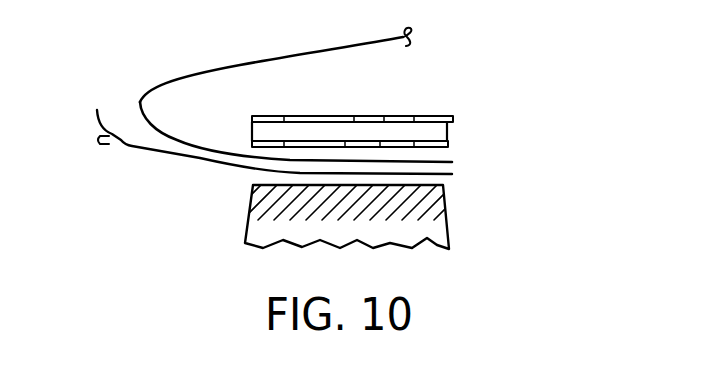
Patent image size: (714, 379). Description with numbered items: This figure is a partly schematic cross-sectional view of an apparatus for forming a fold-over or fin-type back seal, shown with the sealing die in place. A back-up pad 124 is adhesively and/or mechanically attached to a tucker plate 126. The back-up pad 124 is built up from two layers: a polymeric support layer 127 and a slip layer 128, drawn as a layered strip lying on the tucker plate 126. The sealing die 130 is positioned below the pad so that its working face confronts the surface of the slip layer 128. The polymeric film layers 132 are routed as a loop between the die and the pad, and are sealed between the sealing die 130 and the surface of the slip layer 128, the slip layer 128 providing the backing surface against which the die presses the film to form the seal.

The back-up pad 124 is at (403, 116).
The tucker plate 126 is at (453, 120).
The polymeric support layer 127 is at (297, 133).
The slip layer 128 is at (449, 144).
The sealing die 130 is at (448, 229).
The polymeric film layers 132 is at (140, 102).